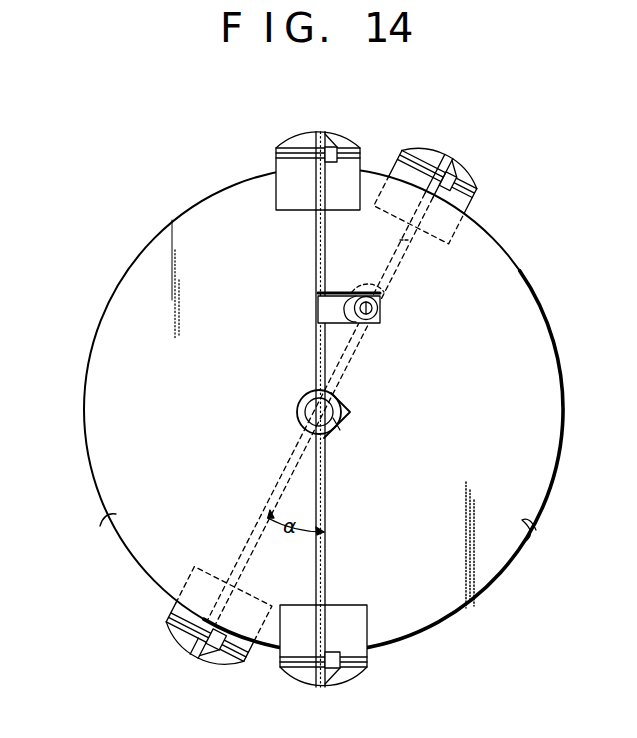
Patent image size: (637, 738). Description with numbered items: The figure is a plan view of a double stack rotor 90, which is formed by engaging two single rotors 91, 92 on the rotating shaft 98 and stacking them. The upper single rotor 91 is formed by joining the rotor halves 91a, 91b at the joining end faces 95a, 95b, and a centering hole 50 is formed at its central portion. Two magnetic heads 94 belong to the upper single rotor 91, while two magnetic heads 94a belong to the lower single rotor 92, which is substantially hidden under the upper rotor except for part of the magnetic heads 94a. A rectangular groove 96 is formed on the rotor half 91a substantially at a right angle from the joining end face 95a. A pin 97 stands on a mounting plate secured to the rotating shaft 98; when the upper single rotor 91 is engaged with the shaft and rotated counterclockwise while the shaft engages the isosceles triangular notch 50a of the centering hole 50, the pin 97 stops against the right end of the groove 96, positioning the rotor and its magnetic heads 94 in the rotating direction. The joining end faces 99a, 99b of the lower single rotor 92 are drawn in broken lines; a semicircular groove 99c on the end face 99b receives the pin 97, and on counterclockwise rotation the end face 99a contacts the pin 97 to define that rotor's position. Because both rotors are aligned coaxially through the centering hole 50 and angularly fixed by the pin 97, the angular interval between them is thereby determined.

The double stack rotor 90 is at (557, 595).
The single rotor 91 is at (447, 603).
The rotor half 91a is at (560, 536).
The rotor half 91b is at (112, 515).
The single rotor 92 is at (487, 547).
The magnetic head 94 is at (300, 143).
The magnetic head 94a is at (465, 185).
The joining end face 95a is at (316, 236).
The joining end face 95b is at (325, 240).
The rectangular groove 96 is at (334, 319).
The pin 97 is at (380, 309).
The rotating shaft 98 is at (338, 426).
The joining end face 99a is at (396, 270).
The joining end face 99b is at (406, 248).
The semicircular groove 99c is at (318, 296).
The centering hole 50 is at (287, 405).
The isosceles triangular notch 50a is at (342, 416).